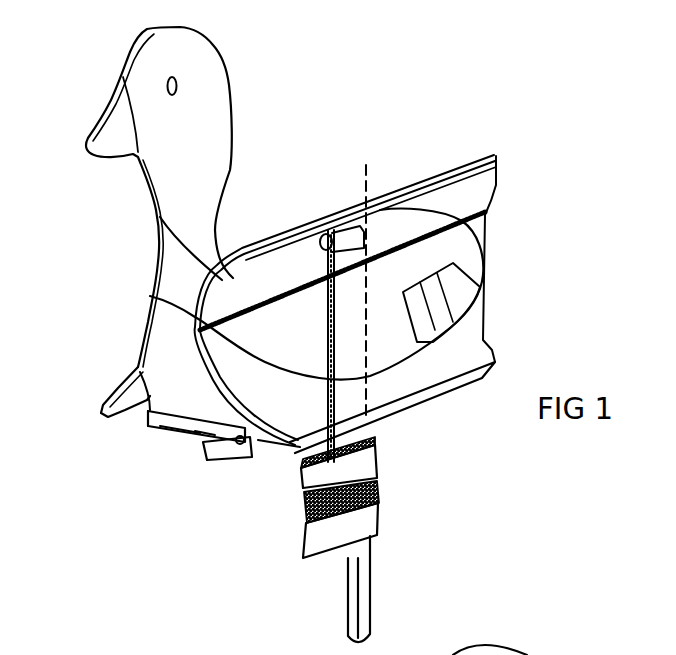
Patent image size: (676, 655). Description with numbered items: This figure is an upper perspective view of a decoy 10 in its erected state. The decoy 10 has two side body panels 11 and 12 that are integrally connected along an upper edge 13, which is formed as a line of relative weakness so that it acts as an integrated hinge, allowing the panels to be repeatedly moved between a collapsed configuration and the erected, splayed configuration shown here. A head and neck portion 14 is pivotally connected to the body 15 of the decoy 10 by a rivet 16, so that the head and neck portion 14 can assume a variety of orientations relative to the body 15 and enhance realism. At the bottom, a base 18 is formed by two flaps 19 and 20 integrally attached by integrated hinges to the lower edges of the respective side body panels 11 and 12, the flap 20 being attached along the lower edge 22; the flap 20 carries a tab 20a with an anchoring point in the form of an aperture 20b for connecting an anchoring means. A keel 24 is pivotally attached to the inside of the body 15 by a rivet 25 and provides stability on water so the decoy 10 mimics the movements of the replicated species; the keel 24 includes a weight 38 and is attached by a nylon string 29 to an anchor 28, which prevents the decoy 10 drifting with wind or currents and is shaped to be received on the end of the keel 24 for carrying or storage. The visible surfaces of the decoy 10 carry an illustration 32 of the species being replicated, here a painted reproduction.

The decoy 10 is at (407, 105).
The side body panel 11 is at (112, 384).
The side body panel 12 is at (253, 440).
The upper edge 13 is at (330, 230).
The head and neck portion 14 is at (178, 205).
The body 15 is at (478, 175).
The rivet 16 is at (208, 307).
The base 18 is at (160, 435).
The flap 19 is at (140, 417).
The flap 20 is at (193, 437).
The tab 20a is at (217, 423).
The aperture 20b is at (297, 399).
The lower edge 22 is at (438, 393).
The keel 24 is at (372, 580).
The rivet 25 is at (366, 160).
The anchor 28 is at (380, 514).
The nylon string 29 is at (377, 487).
The illustration 32 is at (113, 127).
The weight 38 is at (302, 492).